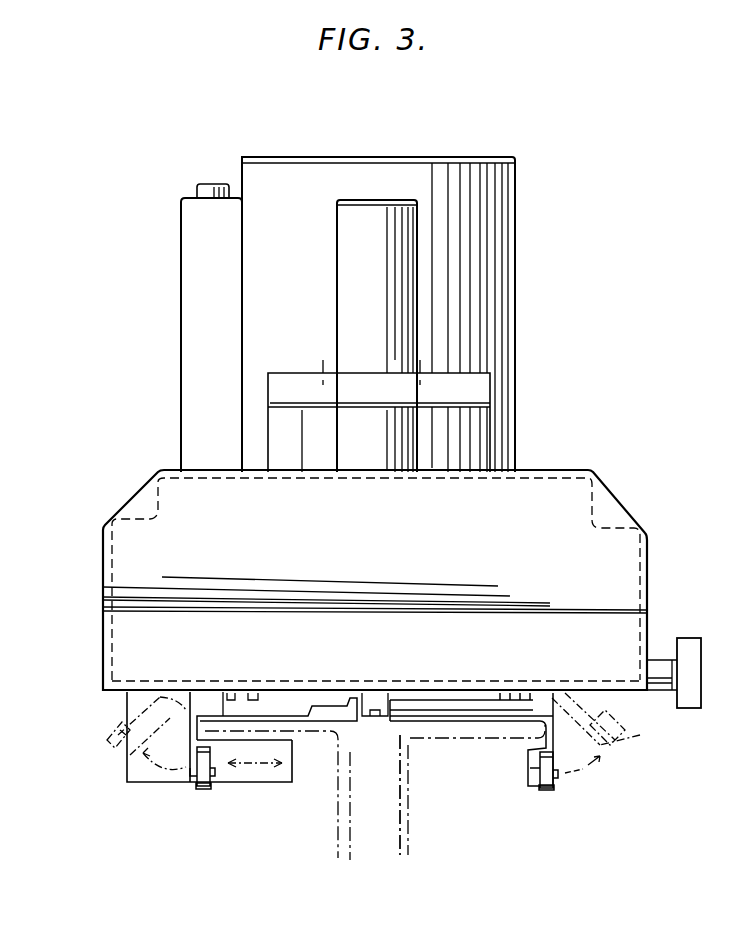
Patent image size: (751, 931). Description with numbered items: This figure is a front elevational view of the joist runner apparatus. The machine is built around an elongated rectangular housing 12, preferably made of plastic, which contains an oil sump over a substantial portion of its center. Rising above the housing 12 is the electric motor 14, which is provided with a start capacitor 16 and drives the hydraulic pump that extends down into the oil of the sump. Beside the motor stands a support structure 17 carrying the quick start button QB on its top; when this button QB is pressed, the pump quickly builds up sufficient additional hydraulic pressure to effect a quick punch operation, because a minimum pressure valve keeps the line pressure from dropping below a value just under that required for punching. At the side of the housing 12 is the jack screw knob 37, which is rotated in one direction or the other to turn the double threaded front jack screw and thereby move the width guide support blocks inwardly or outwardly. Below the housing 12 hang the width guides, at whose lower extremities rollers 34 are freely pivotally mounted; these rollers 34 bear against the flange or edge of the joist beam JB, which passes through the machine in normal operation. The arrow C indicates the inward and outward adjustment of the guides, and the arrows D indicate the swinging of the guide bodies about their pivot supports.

The housing 12 is at (372, 550).
The electric motor 14 is at (295, 297).
The start capacitor 16 is at (369, 321).
The support structure 17 is at (208, 276).
The rollers 34 is at (205, 789).
The jack screw knob 37 is at (684, 640).
The quick start button QB is at (203, 184).
The joist beam JB is at (408, 822).
The direction of travel C is at (255, 772).
The direction of rotation D is at (373, 740).